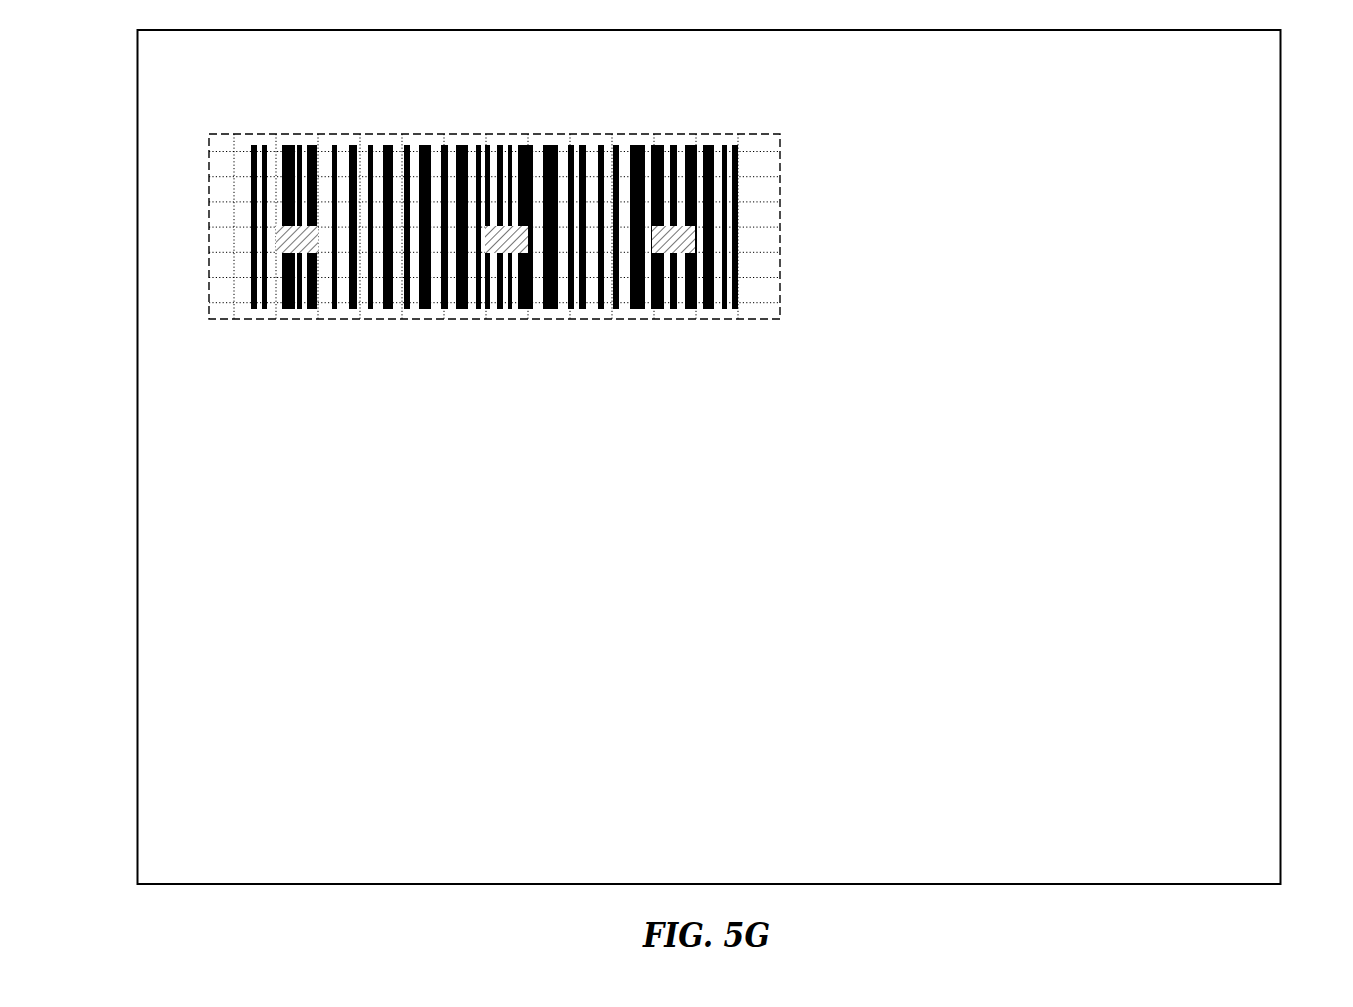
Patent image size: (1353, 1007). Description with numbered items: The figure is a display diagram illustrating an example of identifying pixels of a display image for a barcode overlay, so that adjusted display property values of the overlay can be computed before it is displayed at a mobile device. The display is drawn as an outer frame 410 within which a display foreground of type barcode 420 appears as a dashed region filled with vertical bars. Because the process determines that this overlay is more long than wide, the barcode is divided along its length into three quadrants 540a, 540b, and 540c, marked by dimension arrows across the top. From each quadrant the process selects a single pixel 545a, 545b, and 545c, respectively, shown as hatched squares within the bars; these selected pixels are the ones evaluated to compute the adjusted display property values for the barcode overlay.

The display screen / label sheet 410 is at (1281, 110).
The barcode 420 is at (780, 160).
The first quadrant of the barcode 540a is at (402, 109).
The second quadrant of the barcode 540b is at (586, 109).
The third quadrant of the barcode 540c is at (779, 109).
The pixel 545a is at (299, 240).
The pixel 545b is at (507, 240).
The pixel 545c is at (673, 253).